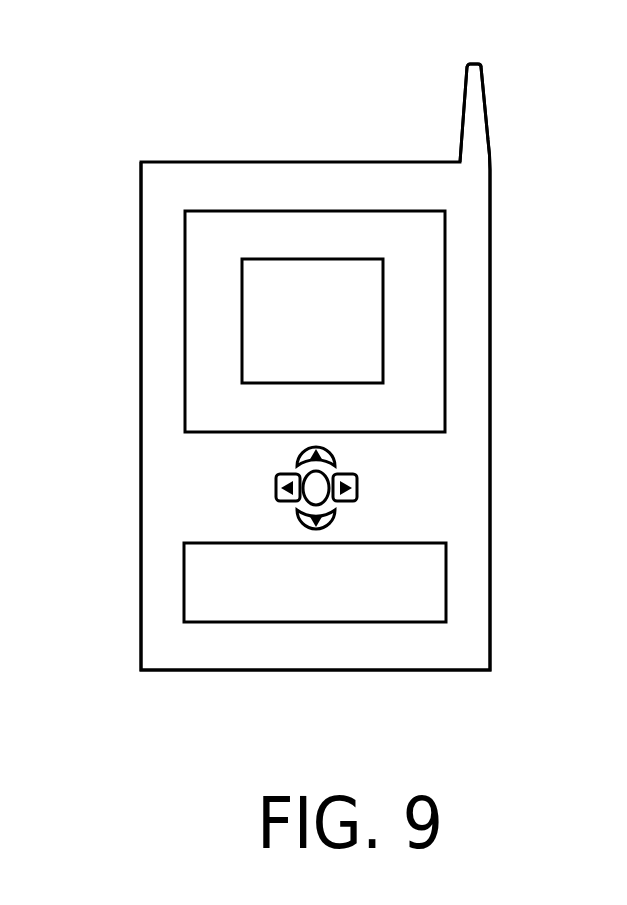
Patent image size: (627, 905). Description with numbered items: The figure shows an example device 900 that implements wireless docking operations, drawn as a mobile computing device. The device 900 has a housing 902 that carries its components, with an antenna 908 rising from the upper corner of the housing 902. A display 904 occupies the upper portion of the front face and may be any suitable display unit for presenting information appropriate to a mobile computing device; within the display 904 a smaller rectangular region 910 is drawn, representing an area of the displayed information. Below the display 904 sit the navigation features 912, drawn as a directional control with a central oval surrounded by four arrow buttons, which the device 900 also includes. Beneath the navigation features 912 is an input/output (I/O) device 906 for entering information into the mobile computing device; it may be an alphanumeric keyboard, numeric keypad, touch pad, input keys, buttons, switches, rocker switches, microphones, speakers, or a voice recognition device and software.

The device 900 is at (156, 80).
The housing 902 is at (496, 414).
The display 904 is at (454, 232).
The input/output (I/O) device 906 is at (456, 572).
The antenna 908 is at (456, 106).
The display window / image area 910 is at (396, 338).
The navigation features 912 is at (368, 483).